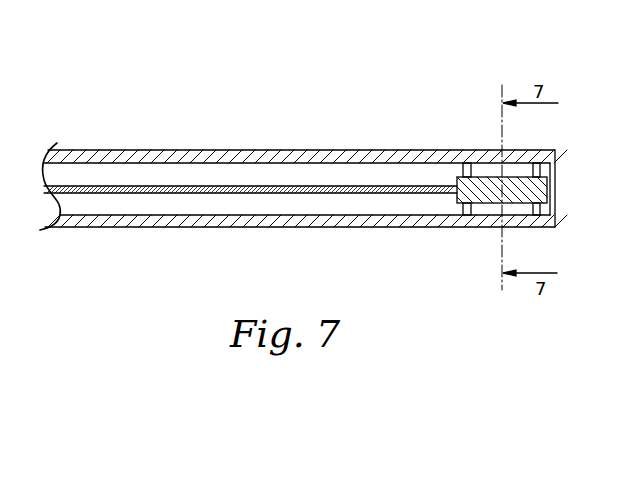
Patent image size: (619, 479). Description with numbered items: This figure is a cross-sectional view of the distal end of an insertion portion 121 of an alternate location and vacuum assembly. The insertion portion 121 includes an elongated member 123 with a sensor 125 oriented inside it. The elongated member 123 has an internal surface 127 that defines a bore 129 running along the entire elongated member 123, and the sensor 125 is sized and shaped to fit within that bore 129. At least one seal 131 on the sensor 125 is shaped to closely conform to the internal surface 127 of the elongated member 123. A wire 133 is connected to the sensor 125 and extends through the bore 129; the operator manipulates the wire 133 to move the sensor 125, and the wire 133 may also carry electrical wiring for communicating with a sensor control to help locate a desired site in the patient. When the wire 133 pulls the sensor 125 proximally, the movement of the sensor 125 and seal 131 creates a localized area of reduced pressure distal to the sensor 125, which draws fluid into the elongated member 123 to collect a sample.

The insertion portion 121 is at (261, 50).
The elongated member 123 is at (108, 150).
The sensor 125 is at (487, 200).
The internal surface 127 is at (178, 196).
The bore 129 is at (311, 175).
The seal 131 is at (463, 168).
The wire 133 is at (222, 194).